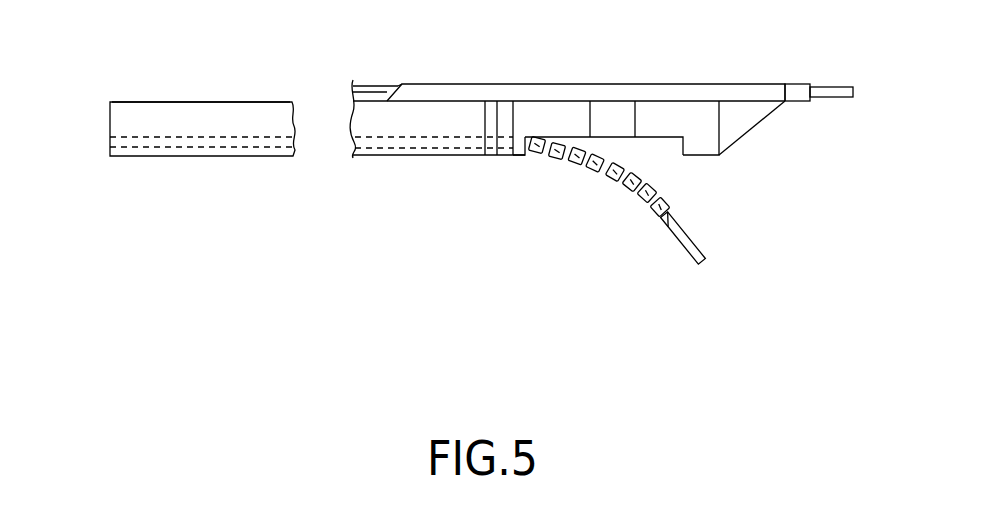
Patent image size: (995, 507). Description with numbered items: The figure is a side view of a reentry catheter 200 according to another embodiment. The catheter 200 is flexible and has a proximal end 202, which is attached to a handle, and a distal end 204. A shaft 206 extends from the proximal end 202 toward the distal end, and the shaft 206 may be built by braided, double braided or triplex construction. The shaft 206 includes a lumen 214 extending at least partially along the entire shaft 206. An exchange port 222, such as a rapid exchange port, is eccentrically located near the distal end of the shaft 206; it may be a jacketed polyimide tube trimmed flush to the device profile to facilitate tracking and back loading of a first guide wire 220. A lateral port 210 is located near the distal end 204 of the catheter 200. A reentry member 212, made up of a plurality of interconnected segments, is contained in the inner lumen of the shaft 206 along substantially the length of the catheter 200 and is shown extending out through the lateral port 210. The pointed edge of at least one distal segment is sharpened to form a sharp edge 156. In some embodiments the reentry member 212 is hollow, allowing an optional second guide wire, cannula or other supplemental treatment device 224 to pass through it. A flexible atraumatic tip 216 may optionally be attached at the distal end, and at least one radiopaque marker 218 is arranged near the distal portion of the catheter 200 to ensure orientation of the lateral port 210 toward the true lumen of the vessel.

The reentry catheter 200 is at (714, 44).
The proximal end 202 is at (110, 119).
The distal end 204 is at (805, 103).
The shaft 206 is at (214, 102).
The lateral port 210 is at (663, 153).
The reentry member 212 is at (620, 187).
The lumen 214 is at (417, 142).
The flexible atraumatic tip 216 is at (752, 135).
The radiopaque marker 218 is at (493, 101).
The first guide wire 220 is at (852, 88).
The exchange port 222 is at (446, 84).
The supplemental treatment device 224 is at (700, 248).
The sharp edge 156 is at (677, 212).